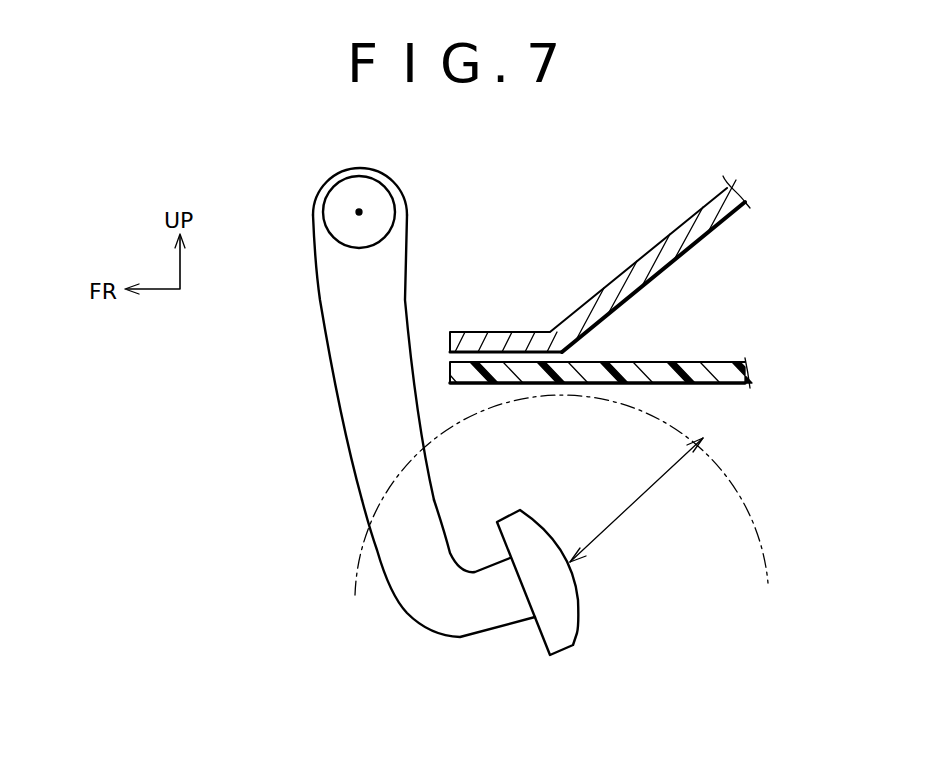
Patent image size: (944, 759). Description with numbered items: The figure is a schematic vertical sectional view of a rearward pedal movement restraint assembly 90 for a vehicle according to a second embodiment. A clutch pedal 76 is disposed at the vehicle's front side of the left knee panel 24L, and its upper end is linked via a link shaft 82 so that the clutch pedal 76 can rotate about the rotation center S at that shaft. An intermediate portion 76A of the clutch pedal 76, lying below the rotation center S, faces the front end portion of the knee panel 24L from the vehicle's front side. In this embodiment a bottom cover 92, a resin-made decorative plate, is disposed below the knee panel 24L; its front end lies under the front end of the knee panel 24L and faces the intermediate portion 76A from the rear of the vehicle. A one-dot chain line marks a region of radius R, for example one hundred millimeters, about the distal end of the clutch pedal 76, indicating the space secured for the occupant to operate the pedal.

The clutch pedal 76 is at (403, 411).
The intermediate portion of the clutch pedal 76A is at (325, 352).
The link shaft 82 is at (332, 173).
The rotation center S is at (359, 212).
The rearward pedal movement restraint assembly 90 is at (518, 201).
The left knee panel 24L is at (623, 268).
The bottom cover 92 is at (690, 358).
The radius R is at (637, 502).